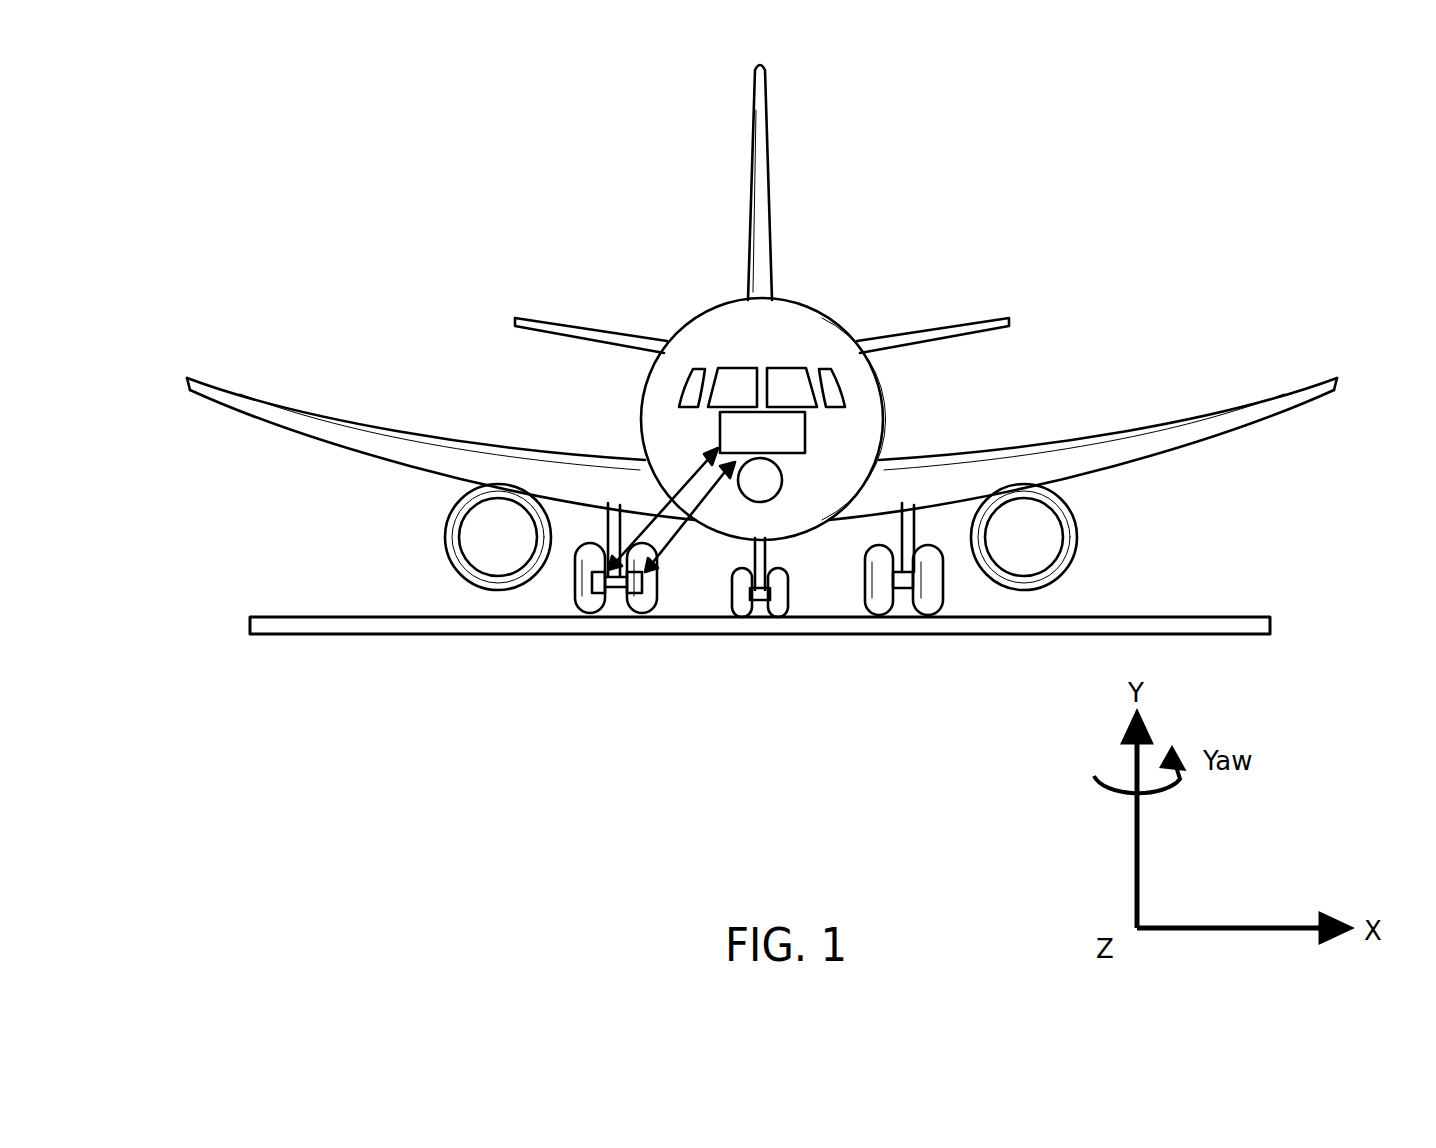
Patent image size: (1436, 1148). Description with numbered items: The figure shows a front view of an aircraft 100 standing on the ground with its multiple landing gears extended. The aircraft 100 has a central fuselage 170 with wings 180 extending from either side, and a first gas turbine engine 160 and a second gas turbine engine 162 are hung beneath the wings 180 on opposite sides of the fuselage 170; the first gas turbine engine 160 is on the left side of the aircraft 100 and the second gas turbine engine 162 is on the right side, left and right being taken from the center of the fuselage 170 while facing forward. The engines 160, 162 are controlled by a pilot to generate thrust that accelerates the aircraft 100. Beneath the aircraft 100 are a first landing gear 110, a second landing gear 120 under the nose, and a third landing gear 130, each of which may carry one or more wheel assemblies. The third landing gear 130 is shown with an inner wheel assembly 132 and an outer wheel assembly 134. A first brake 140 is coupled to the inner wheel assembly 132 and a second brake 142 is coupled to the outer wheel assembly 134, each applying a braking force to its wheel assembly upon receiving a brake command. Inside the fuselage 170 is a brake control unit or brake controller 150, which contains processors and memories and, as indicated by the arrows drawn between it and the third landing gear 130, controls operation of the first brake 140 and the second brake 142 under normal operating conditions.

The aircraft 100 is at (762, 390).
The first landing gear 110 is at (945, 598).
The second landing gear 120 is at (790, 598).
The third landing gear 130 is at (625, 623).
The inner wheel assembly 132 is at (642, 614).
The outer wheel assembly 134 is at (592, 614).
The first brake 140 is at (648, 586).
The second brake 142 is at (592, 596).
The brake controller 150 is at (808, 437).
The first gas turbine engine 160 is at (1065, 535).
The second gas turbine engine 162 is at (460, 556).
The fuselage 170 is at (803, 312).
The wings 180 is at (418, 458).